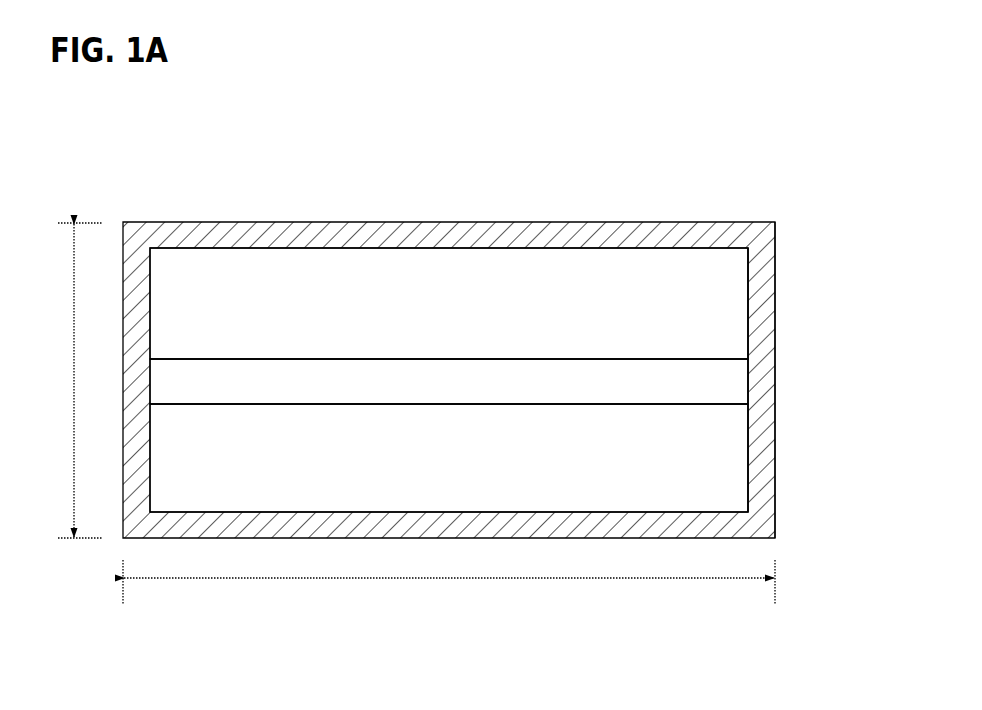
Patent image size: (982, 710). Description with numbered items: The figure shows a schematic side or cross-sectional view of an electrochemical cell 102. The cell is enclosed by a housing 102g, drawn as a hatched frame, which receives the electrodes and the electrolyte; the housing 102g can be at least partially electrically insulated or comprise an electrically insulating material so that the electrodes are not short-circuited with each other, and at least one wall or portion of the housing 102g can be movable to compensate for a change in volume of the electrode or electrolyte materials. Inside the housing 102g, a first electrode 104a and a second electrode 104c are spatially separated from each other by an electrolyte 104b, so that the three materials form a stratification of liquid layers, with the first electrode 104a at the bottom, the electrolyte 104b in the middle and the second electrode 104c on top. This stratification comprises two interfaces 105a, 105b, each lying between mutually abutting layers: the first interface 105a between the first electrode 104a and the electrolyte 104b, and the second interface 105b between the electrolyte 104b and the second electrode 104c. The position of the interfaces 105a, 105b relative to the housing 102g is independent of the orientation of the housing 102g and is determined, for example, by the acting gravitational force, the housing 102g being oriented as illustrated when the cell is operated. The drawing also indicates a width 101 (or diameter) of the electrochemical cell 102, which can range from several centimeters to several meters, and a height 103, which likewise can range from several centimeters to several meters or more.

The width 101 is at (449, 584).
The electrochemical cell 102 is at (457, 146).
The housing 102g is at (767, 222).
The height 103 is at (63, 380).
The first electrode 104a is at (449, 458).
The electrolyte 104b is at (449, 381).
The second electrode 104c is at (449, 303).
The first interface 105a is at (586, 405).
The second interface 105b is at (582, 359).